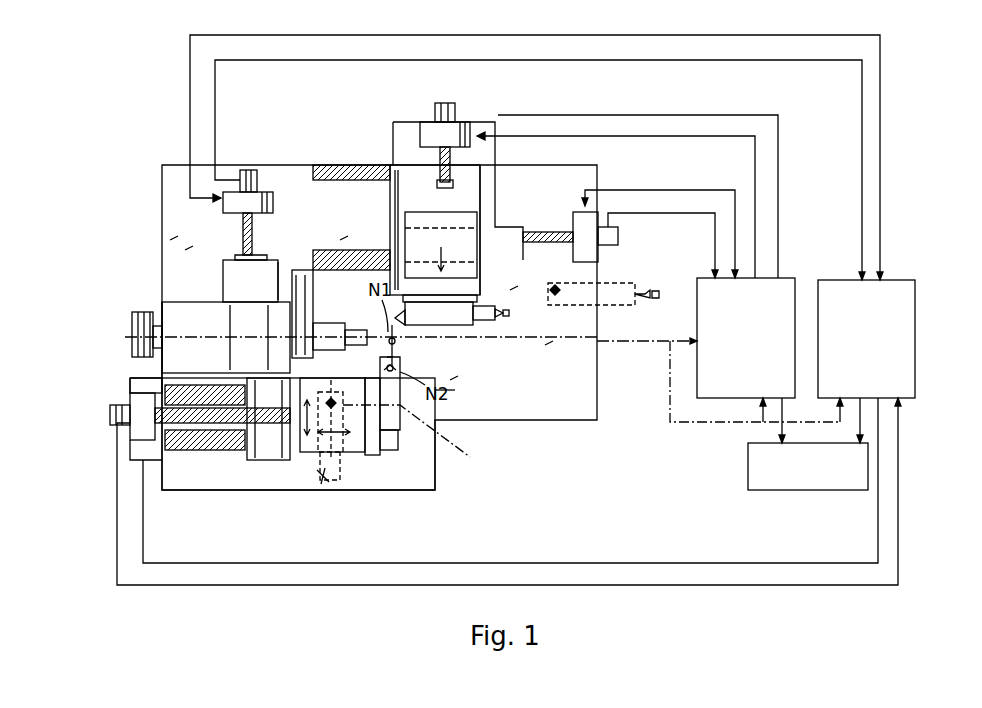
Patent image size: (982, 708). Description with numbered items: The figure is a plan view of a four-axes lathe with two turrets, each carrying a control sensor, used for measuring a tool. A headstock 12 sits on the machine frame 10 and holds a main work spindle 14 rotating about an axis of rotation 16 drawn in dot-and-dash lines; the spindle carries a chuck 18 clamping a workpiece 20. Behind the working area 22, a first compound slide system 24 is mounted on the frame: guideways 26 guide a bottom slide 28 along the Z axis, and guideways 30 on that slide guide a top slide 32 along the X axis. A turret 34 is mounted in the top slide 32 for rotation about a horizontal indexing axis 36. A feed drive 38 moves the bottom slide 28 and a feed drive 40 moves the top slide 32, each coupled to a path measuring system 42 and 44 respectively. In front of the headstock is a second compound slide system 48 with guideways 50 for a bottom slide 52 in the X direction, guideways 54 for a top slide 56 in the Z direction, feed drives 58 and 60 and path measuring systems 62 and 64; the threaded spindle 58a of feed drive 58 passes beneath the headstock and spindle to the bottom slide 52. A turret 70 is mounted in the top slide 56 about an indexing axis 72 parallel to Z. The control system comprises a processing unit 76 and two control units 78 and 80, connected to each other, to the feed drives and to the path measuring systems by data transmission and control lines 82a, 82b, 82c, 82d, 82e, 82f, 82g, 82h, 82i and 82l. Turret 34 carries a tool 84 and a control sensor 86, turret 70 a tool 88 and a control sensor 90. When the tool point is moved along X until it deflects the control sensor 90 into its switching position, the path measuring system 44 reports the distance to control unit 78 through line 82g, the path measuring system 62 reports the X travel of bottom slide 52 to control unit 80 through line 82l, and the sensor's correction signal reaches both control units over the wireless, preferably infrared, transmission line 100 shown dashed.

The machine frame 10 is at (552, 415).
The headstock 12 is at (170, 300).
The main work spindle 14 is at (134, 322).
The axis of rotation 16 is at (128, 338).
The chuck 18 is at (352, 345).
The workpiece 20 is at (330, 322).
The working area 22 is at (400, 355).
The first compound slide system 24 is at (500, 122).
The guideways 26 is at (330, 178).
The bottom slide 28 is at (510, 228).
The guideways 30 is at (440, 160).
The top slide 32 is at (420, 240).
The turret 34 is at (485, 322).
The horizontal indexing axis 36 is at (455, 326).
The feed drive 38 is at (600, 248).
The feed drive 40 is at (440, 120).
The path measuring system 42 is at (618, 233).
The path measuring system 44 is at (445, 110).
The second compound slide system 48 is at (130, 462).
The guideways 50 is at (260, 490).
The bottom slide 52 is at (150, 455).
The guideways 54 is at (205, 450).
The top slide 56 is at (300, 460).
The feed drive 58 is at (222, 200).
The threaded spindle 58a is at (244, 235).
The feed drive 60 is at (140, 390).
The path measuring system 62 is at (240, 182).
The path measuring system 64 is at (110, 412).
The turret 70 is at (390, 460).
The indexing axis 72 is at (416, 439).
The processing unit 76 is at (792, 492).
The control unit 78 is at (790, 276).
The control unit 80 is at (892, 278).
The data transmission and control line 82a is at (763, 425).
The data transmission and control line 82b is at (782, 430).
The data transmission and control line 82c is at (862, 420).
The data transmission and control line 82d is at (690, 212).
The data transmission and control line 82e is at (740, 205).
The data transmission and control line 82f is at (598, 134).
The data transmission line 82g is at (650, 113).
The data transmission and control line 82h is at (864, 138).
The data transmission and control line 82i is at (632, 585).
The data transmission line 82l is at (882, 92).
The tool 84 is at (396, 342).
The control sensor 86 is at (510, 317).
The tool 88 is at (372, 458).
The control sensor 90 is at (385, 365).
The transmission line 100 is at (648, 345).